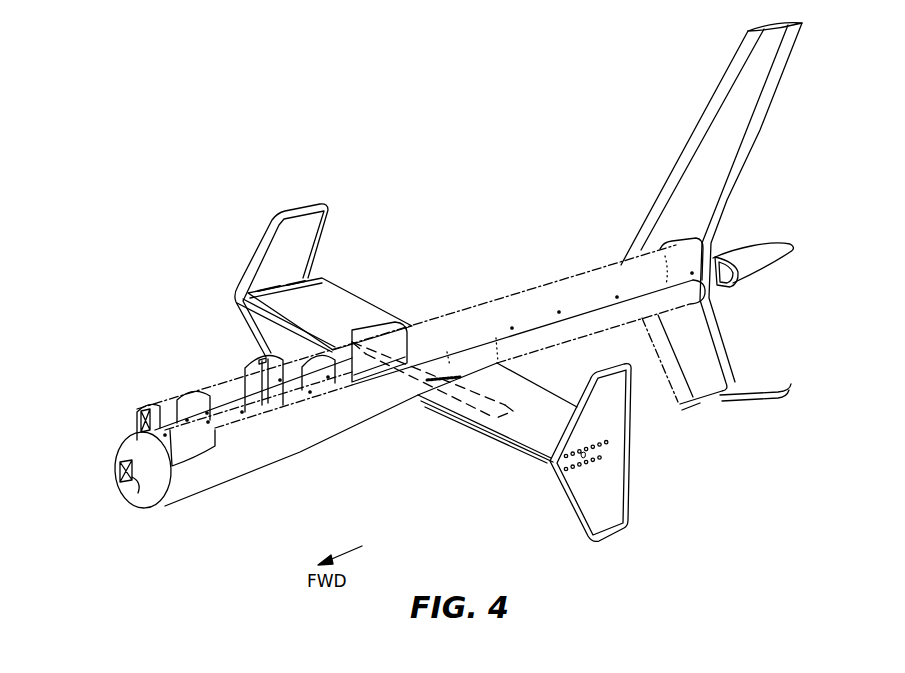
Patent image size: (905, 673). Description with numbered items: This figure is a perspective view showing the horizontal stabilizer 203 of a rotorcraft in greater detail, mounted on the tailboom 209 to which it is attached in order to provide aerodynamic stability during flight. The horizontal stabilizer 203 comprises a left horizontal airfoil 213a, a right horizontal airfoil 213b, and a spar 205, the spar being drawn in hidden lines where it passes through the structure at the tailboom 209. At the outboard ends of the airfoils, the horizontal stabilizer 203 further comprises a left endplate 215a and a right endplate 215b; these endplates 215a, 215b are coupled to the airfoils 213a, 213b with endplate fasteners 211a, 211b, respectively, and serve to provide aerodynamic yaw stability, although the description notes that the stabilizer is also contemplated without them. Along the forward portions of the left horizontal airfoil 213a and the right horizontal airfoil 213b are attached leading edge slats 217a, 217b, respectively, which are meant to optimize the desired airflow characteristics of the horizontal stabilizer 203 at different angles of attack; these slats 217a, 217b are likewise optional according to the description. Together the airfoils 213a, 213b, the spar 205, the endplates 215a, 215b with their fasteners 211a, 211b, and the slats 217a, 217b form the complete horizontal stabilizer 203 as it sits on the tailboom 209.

The horizontal stabilizer 203 is at (199, 231).
The spar 205 is at (462, 402).
The tailboom 209 is at (220, 480).
The endplate fastener 211a is at (604, 453).
The endplate fastener 211b is at (255, 293).
The left horizontal airfoil 213a is at (524, 398).
The right horizontal airfoil 213b is at (338, 301).
The left endplate 215a is at (603, 548).
The right endplate 215b is at (333, 206).
The leading edge slat 217a is at (530, 456).
The leading edge slat 217b is at (268, 321).